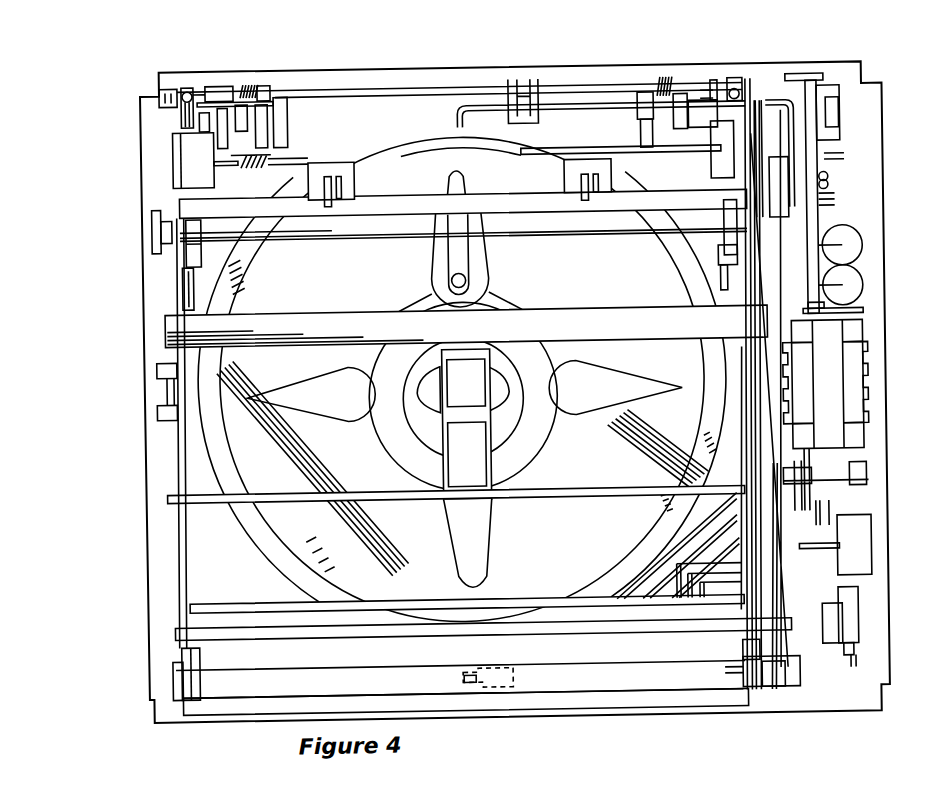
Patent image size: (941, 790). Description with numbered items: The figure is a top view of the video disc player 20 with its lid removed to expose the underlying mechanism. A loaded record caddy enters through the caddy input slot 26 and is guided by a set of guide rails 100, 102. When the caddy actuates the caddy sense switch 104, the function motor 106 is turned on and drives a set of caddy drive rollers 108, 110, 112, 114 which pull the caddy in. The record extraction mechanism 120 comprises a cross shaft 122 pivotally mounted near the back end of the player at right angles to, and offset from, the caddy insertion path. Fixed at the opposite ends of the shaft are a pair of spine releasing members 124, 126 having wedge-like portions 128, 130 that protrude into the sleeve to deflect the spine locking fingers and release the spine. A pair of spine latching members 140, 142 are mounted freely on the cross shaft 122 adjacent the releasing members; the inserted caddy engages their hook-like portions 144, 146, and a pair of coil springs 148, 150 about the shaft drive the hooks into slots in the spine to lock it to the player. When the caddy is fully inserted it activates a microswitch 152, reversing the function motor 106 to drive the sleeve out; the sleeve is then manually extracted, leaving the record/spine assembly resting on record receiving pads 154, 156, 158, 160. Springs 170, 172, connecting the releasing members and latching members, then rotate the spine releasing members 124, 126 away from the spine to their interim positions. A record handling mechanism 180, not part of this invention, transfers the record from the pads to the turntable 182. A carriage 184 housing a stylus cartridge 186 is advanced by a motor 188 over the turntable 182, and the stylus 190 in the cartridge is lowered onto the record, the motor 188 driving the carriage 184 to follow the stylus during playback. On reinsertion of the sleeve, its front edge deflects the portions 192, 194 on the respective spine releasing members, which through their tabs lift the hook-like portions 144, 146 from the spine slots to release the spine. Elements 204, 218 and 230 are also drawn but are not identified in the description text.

The video disc player 20 is at (935, 353).
The caddy input slot 26 is at (252, 711).
The guide rail 100 is at (193, 563).
The guide rail 102 is at (740, 568).
The caddy sense switch 104 is at (177, 285).
The function motor 106 is at (190, 159).
The caddy drive roller 108 is at (197, 266).
The caddy drive roller 110 is at (226, 287).
The caddy drive roller 112 is at (721, 254).
The caddy drive roller 114 is at (718, 273).
The record extraction mechanism 120 is at (572, 80).
The cross shaft 122 is at (390, 93).
The spine releasing member 124 is at (188, 89).
The spine releasing member 126 is at (730, 91).
The wedge-like portion 128 is at (183, 119).
The wedge-like portion 130 is at (690, 116).
The spine latching member 140 is at (228, 90).
The spine latching member 142 is at (692, 90).
The hook-like portion 144 is at (245, 133).
The hook-like portion 146 is at (677, 129).
The coil spring 148 is at (257, 93).
The coil spring 150 is at (658, 90).
The microswitch 152 is at (176, 138).
The record receiving pad 154 is at (288, 608).
The record receiving pad 156 is at (623, 606).
The record receiving pad 158 is at (335, 160).
The record receiving pad 160 is at (578, 166).
The spring 170 is at (213, 90).
The spring 172 is at (717, 94).
The record handling mechanism 180 is at (500, 278).
The turntable 182 is at (229, 431).
The carriage 184 is at (619, 697).
The stylus cartridge 186 is at (509, 677).
The motor 188 is at (861, 561).
The stylus 190 is at (458, 681).
The portion 192 is at (168, 92).
The portion 194 is at (742, 121).
The nozzle 204 is at (473, 560).
The hub housing 218 is at (473, 474).
The scroll surface 230 is at (393, 609).